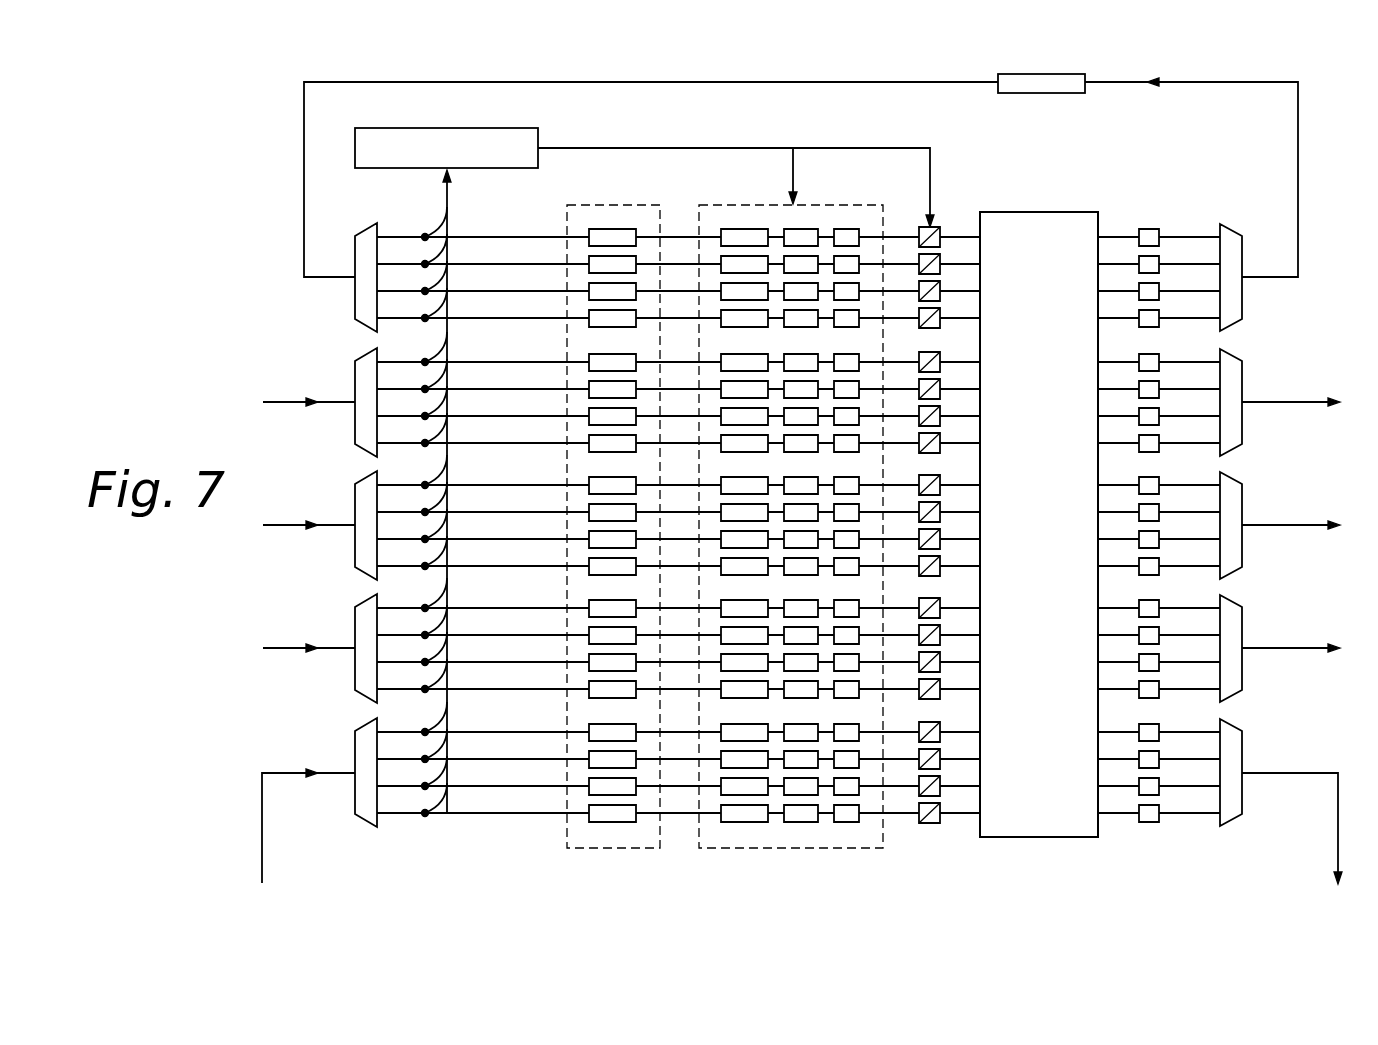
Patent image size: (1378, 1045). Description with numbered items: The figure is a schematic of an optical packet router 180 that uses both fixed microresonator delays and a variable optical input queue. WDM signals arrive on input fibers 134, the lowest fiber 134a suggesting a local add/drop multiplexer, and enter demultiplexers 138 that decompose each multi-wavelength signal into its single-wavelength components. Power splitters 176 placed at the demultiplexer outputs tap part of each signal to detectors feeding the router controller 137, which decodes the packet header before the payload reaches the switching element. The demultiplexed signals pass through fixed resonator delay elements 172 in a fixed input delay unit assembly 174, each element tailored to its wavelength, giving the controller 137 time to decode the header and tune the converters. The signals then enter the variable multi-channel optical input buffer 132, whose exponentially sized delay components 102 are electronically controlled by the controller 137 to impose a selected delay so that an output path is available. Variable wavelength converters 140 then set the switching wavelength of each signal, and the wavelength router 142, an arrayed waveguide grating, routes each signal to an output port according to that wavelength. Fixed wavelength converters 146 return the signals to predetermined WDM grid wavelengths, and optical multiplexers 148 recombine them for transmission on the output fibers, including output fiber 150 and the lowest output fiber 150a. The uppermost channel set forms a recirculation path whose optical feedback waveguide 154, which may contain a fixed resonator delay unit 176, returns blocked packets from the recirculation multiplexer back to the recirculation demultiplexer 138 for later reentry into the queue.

The router 180 is at (204, 150).
The router controller 137 is at (431, 128).
The power splitters / fixed resonator delay unit 176 is at (424, 233).
The optical feedback waveguide 154 is at (1198, 84).
The input fibers 134 is at (290, 399).
The lowest input fiber 134a is at (262, 823).
The demultiplexers 138 is at (363, 826).
The fixed resonator delay elements 172 is at (610, 823).
The fixed input delay unit assembly 174 is at (641, 851).
The delay components 102 is at (741, 823).
The variable multi-channel optical input buffer 132 is at (790, 851).
The variable wavelength converters 140 is at (925, 825).
The wavelength router 142 is at (1040, 838).
The fixed wavelength converters 146 is at (1145, 823).
The optical multiplexers 148 is at (1228, 826).
The output fiber 150 is at (1283, 400).
The lowest output fiber 150a is at (1338, 823).